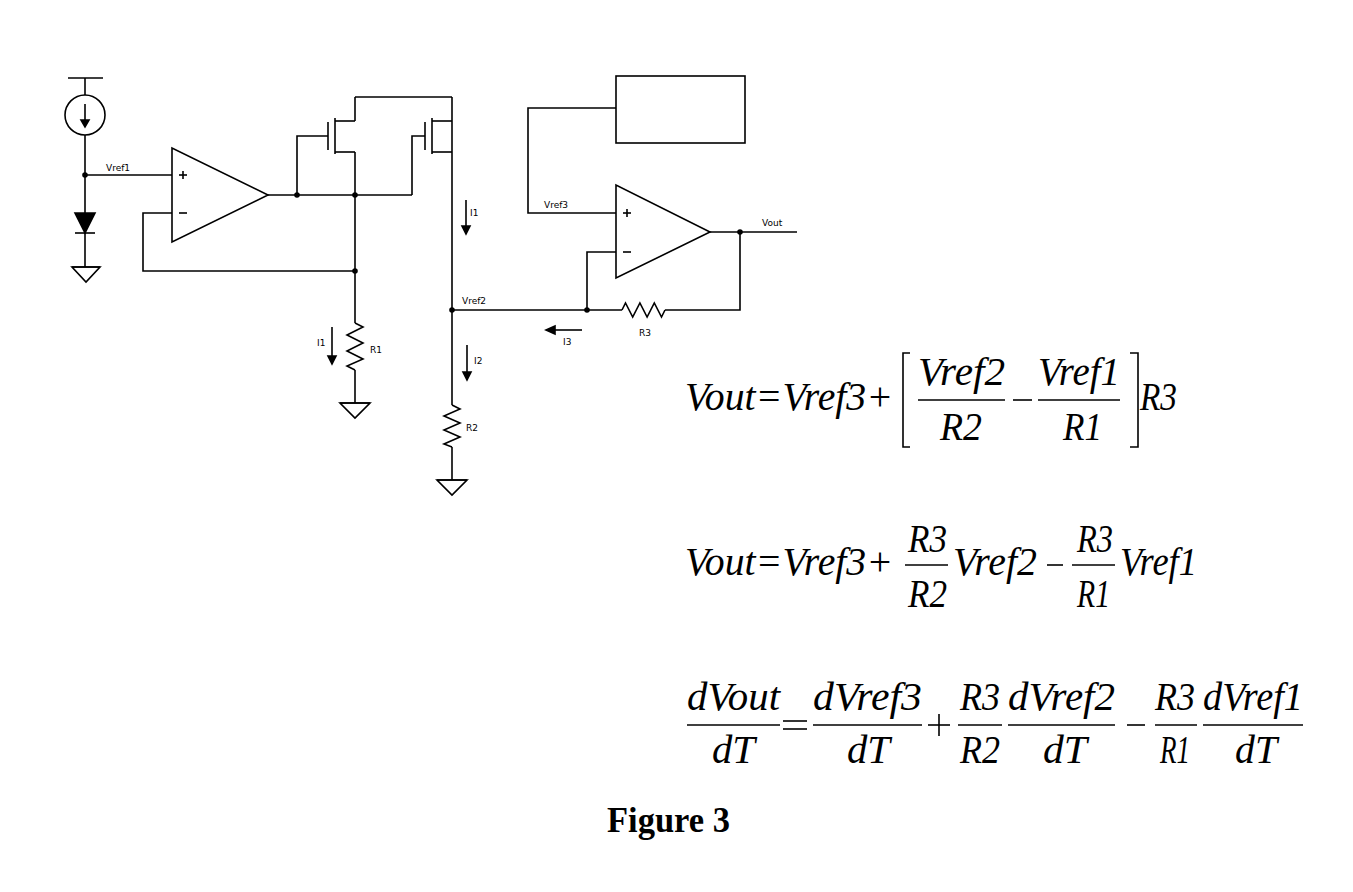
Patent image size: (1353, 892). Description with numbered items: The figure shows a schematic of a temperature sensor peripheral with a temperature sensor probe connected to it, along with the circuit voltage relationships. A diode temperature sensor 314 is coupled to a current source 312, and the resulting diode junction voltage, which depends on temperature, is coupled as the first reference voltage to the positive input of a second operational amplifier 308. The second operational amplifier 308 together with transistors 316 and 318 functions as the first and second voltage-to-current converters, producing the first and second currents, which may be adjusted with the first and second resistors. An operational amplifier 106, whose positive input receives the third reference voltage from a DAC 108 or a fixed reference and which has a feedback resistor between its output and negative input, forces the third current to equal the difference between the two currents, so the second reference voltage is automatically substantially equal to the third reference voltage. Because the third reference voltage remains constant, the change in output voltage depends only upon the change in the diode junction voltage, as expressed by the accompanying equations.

The current source 312 is at (104, 112).
The diode temperature sensor 314 is at (92, 216).
The second operational amplifier 308 is at (207, 162).
The transistor 316 is at (327, 122).
The transistor 318 is at (453, 121).
The digital-to-analog converter 108 is at (729, 76).
The operational amplifier 106 is at (684, 218).